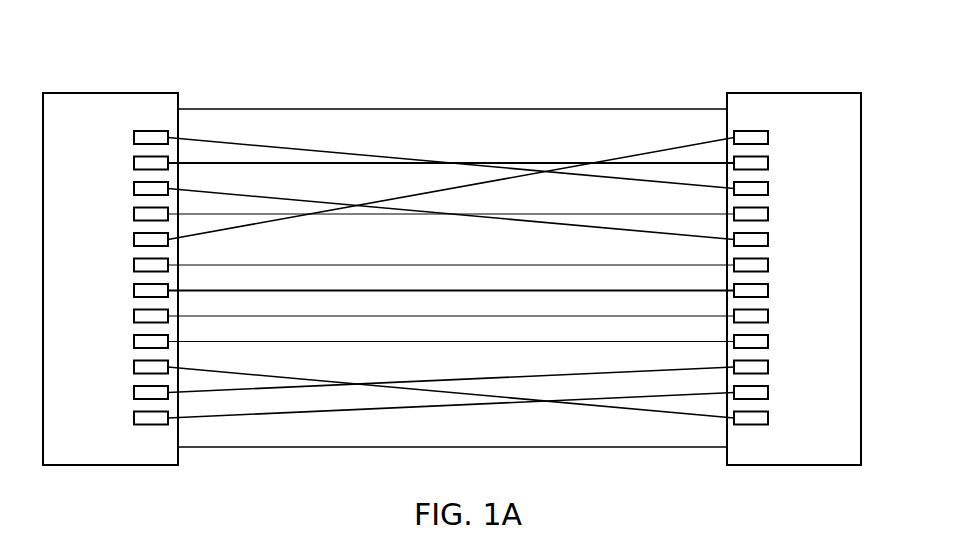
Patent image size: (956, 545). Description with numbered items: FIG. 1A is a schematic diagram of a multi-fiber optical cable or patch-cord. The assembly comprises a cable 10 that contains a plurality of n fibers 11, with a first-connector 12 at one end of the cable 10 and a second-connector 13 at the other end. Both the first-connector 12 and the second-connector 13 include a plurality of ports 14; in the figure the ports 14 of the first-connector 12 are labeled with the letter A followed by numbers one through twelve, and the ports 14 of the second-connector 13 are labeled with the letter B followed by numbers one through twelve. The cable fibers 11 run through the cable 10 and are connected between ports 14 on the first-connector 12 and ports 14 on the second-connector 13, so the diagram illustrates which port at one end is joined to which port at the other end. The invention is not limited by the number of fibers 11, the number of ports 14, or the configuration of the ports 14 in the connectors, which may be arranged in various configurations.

The cable 10 is at (451, 254).
The fibers 11 is at (263, 195).
The first-connector 12 is at (118, 93).
The second-connector 13 is at (797, 93).
The ports 14 is at (140, 424).